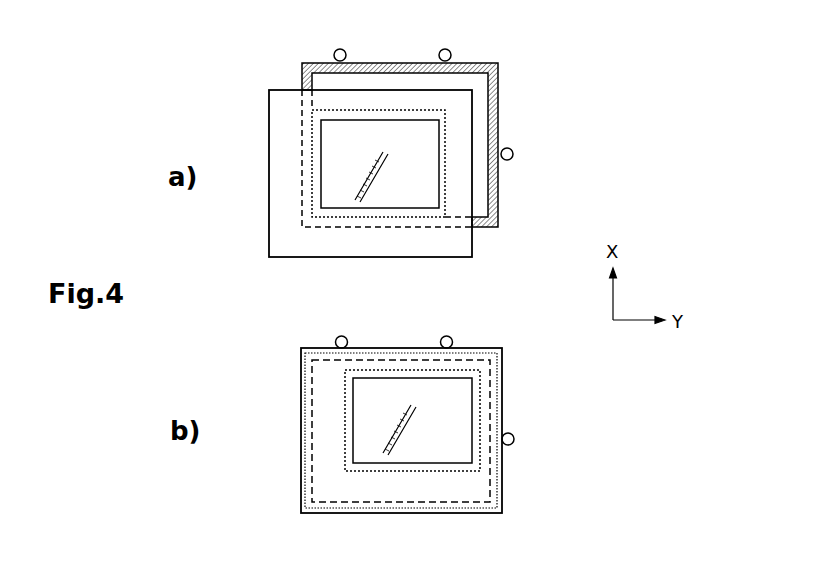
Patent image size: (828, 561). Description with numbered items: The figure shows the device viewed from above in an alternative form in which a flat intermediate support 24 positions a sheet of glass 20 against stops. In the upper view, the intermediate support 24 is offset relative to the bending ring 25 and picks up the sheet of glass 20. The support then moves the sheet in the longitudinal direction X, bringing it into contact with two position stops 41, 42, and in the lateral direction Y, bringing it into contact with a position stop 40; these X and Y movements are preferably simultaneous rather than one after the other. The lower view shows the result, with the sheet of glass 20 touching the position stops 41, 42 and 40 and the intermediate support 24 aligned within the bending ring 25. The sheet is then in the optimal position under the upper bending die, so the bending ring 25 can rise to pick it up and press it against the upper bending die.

The sheet of glass 20 is at (269, 133).
The flat intermediate support 24 is at (443, 185).
The bending ring 25 is at (498, 102).
The position stop 40 is at (513, 154).
The position stop 41 is at (340, 48).
The position stop 42 is at (445, 49).